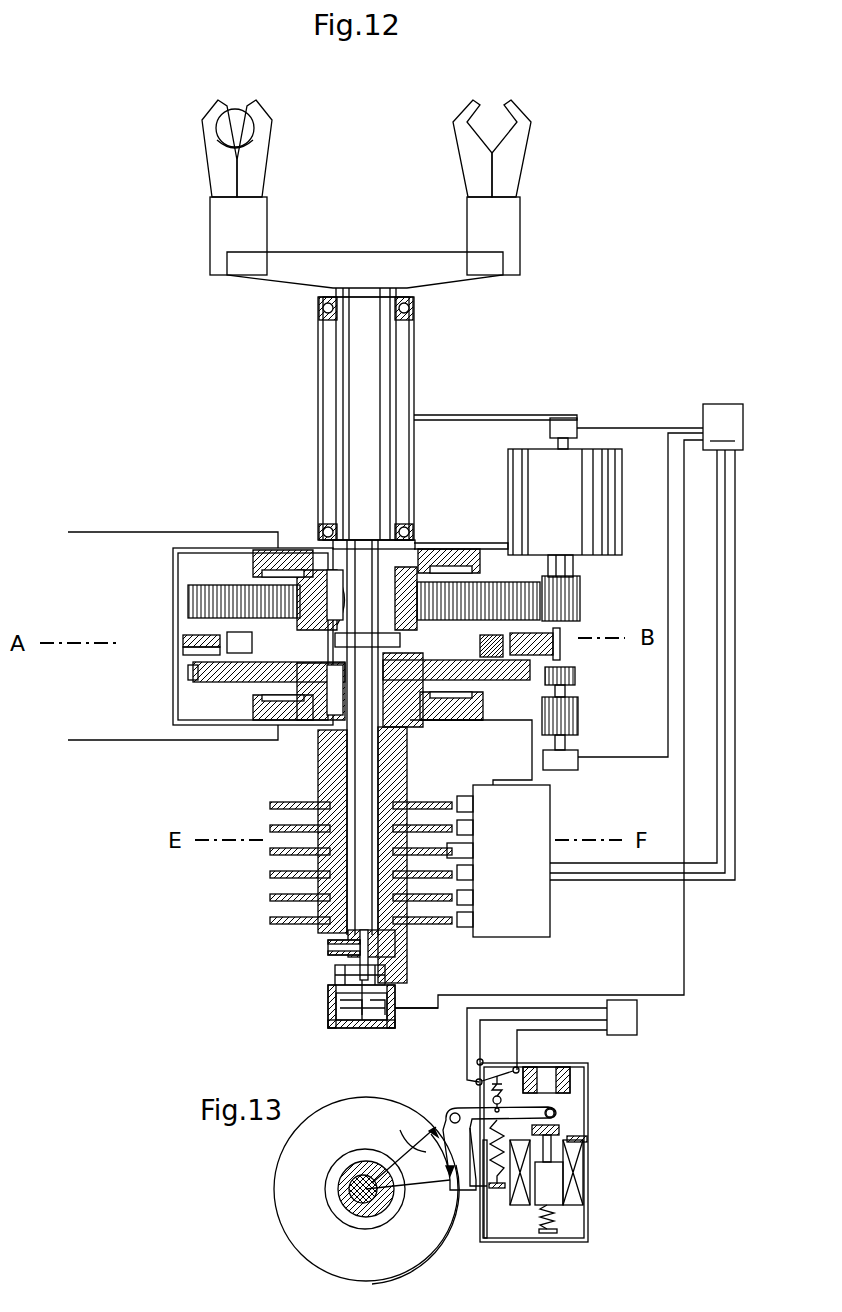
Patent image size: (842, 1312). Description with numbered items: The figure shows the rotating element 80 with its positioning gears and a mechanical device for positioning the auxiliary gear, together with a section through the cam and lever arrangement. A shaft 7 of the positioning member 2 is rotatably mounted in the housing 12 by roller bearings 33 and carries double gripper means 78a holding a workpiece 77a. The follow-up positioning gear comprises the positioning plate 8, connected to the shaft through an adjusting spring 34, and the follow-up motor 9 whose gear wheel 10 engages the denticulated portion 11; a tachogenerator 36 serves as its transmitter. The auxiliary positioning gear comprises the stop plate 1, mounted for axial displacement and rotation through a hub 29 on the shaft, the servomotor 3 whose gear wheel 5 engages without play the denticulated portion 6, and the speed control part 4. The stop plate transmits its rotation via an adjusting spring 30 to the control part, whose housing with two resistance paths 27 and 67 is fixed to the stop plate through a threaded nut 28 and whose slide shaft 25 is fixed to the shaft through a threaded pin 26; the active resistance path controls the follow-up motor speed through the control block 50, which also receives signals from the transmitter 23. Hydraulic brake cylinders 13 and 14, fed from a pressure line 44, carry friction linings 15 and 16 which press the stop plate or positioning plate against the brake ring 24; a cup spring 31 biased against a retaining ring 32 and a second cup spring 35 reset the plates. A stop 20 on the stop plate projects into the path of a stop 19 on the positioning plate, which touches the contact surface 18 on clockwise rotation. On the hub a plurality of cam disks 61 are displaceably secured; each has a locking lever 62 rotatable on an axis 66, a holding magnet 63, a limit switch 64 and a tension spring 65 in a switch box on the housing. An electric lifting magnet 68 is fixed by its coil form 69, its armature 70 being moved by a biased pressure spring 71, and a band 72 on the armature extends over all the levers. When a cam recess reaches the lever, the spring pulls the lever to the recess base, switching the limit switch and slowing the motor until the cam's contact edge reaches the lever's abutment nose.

In FIG. 12, the workpiece 77a is at (224, 128).
In FIG. 12, the double gripper means 78a is at (478, 178).
In FIG. 12, the positioning member 2 is at (258, 268).
In FIG. 12, the housing 12 is at (414, 333).
In FIG. 12, the shaft 7 is at (383, 380).
In FIG. 12, the roller bearings 33 is at (319, 318).
In FIG. 12, the rotating element 80 is at (470, 413).
In FIG. 12, the tachogenerator 36 is at (563, 418).
In FIG. 12, the follow-up motor 9 is at (605, 476).
In FIG. 12, the gear wheel 10 is at (580, 594).
In FIG. 12, the control block 50 is at (628, 1040).
In FIG. 12, the pressure line 44 is at (92, 530).
In FIG. 12, the denticulated portion 11 is at (196, 583).
In FIG. 12, the second cup spring 35 is at (300, 610).
In FIG. 12, the adjusting spring 34 is at (332, 572).
In FIG. 12, the positioning plate 8 is at (500, 580).
In FIG. 12, the friction lining 16 is at (275, 558).
In FIG. 12, the brake cylinder 14 is at (468, 545).
In FIG. 12, the cup spring 31 is at (258, 700).
In FIG. 12, the friction lining 15 is at (462, 712).
In FIG. 12, the brake cylinder 13 is at (440, 710).
In FIG. 12, the stop 19 is at (226, 635).
In FIG. 12, the brake ring 24 is at (182, 640).
In FIG. 12, the contact surface 18 is at (182, 651).
In FIG. 12, the denticulated portion 6 is at (186, 673).
In FIG. 12, the stop plate 1 is at (210, 678).
In FIG. 12, the adjusting spring 30 is at (310, 722).
In FIG. 12, the retaining ring 32 is at (338, 657).
In FIG. 12, the stop 20 is at (478, 645).
In FIG. 12, the gear wheel 5 is at (577, 674).
In FIG. 12, the servomotor 3 is at (580, 716).
In FIG. 12, the transmitter 23 is at (575, 758).
In FIG. 12, the cam disks 61 is at (272, 927).
In FIG. 12, the hub 29 is at (407, 955).
In FIG. 12, the threaded pin 26 is at (328, 950).
In FIG. 12, the threaded nut 28 is at (336, 976).
In FIG. 12, the speed control part 4 is at (328, 1025).
In FIG. 12, the resistance path 27 is at (392, 1000).
In FIG. 12, the slide shaft 25 is at (366, 1022).
In FIG. 12, the resistance path 67 is at (395, 1022).
In FIG. 13, the axis 66 is at (450, 1113).
In FIG. 13, the limit switch 64 is at (490, 1093).
In FIG. 13, the holding magnet 63 is at (562, 1065).
In FIG. 13, the locking lever 62 is at (555, 1110).
In FIG. 13, the band 72 is at (560, 1128).
In FIG. 13, the coil form 69 is at (588, 1140).
In FIG. 13, the electric lifting magnet 68 is at (584, 1165).
In FIG. 13, the armature 70 is at (552, 1190).
In FIG. 13, the tension spring 65 is at (500, 1179).
In FIG. 13, the pressure spring 71 is at (558, 1227).